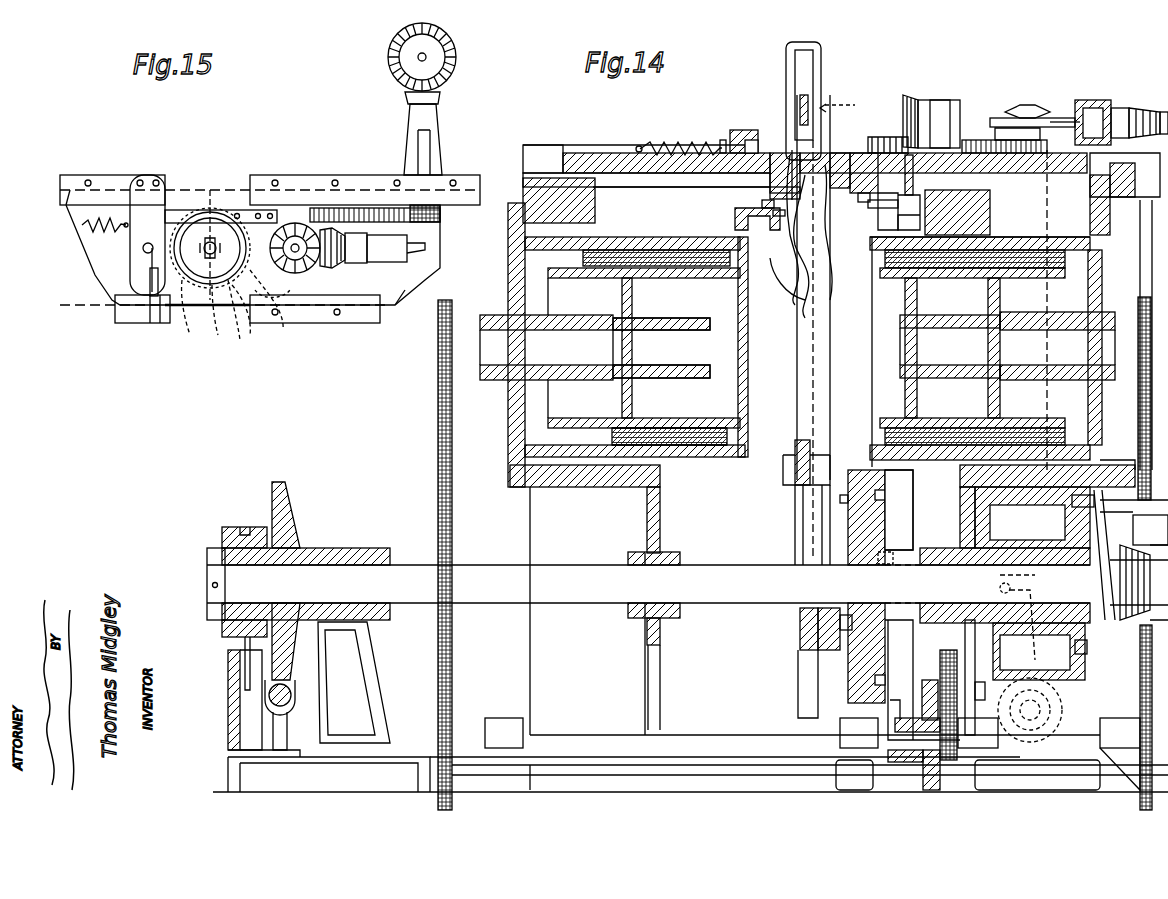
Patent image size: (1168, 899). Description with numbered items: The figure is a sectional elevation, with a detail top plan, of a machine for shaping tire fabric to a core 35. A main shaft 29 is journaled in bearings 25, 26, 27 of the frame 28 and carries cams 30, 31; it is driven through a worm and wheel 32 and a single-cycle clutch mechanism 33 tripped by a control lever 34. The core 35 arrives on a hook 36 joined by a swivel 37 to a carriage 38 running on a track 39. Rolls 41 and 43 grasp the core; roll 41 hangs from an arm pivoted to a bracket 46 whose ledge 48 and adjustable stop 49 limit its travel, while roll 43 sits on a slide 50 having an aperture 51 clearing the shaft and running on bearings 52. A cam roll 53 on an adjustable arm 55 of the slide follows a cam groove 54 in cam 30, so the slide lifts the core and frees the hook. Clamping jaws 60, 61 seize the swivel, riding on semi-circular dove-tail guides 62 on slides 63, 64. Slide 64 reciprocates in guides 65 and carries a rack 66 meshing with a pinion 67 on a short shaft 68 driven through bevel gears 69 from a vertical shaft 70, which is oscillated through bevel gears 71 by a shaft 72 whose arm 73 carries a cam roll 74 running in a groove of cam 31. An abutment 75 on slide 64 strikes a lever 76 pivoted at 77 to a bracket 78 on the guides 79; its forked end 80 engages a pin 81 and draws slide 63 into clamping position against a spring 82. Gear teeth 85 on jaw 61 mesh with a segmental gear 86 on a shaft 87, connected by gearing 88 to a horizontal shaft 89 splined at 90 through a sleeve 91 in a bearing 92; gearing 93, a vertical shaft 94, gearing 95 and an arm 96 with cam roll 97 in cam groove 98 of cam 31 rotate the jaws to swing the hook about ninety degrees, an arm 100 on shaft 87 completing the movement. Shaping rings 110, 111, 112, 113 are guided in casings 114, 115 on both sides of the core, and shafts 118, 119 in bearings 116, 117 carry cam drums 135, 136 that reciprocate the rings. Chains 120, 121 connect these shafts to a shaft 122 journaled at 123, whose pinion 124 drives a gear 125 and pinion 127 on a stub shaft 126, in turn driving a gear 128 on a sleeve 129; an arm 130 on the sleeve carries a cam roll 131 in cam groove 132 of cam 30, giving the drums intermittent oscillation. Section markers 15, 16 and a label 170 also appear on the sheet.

In FIG. 14, the section line 15 is at (855, 145).
In FIG. 14, the direction arrow 16 is at (824, 108).
In FIG. 14, the bearing 25 is at (358, 538).
In FIG. 14, the bearing 26 is at (628, 555).
In FIG. 14, the bearing 27 is at (935, 548).
In FIG. 14, the frame 28 is at (530, 530).
In FIG. 14, the main shaft 29 is at (493, 603).
In FIG. 14, the cam 30 is at (870, 515).
In FIG. 14, the cam 31 is at (1062, 510).
In FIG. 14, the worm and wheel 32 is at (290, 690).
In FIG. 14, the clutch mechanism 33 is at (222, 632).
In FIG. 14, the control lever 34 is at (235, 690).
In FIG. 14, the core 35 is at (797, 381).
In FIG. 14, the hook 36 is at (832, 290).
In FIG. 14, the swivel 37 is at (792, 150).
In FIG. 14, the carriage 38 is at (810, 90).
In FIG. 14, the track 39 is at (805, 98).
In FIG. 14, the roll 41 is at (790, 275).
In FIG. 14, the roll 43 is at (785, 475).
In FIG. 14, the bracket 46 is at (735, 212).
In FIG. 14, the ledge 48 is at (760, 203).
In FIG. 14, the adjustable stop 49 is at (778, 212).
In FIG. 14, the slide 50 is at (800, 630).
In FIG. 14, the aperture 51 is at (798, 530).
In FIG. 14, the bearings 52 is at (800, 702).
In FIG. 14, the cam roll 53 is at (845, 635).
In FIG. 14, the cam groove 54 is at (825, 500).
In FIG. 14, the arm 55 is at (800, 612).
In FIG. 15, the clamping jaw 60 is at (195, 235).
In FIG. 14, the clamping jaw 60 is at (790, 150).
In FIG. 15, the clamping jaw 61 is at (222, 240).
In FIG. 14, the clamping jaw 61 is at (833, 153).
In FIG. 15, the dove-tail guide 62 is at (182, 300).
In FIG. 14, the dove-tail guide 62 is at (775, 152).
In FIG. 15, the slide 63 is at (95, 262).
In FIG. 14, the slide 63 is at (585, 150).
In FIG. 15, the slide 64 is at (400, 300).
In FIG. 14, the slide 64 is at (950, 90).
In FIG. 15, the guides 65 is at (292, 180).
In FIG. 15, the rack 66 is at (352, 210).
In FIG. 14, the rack 66 is at (985, 140).
In FIG. 15, the pinion 67 is at (443, 216).
In FIG. 14, the pinion 67 is at (1040, 92).
In FIG. 15, the short shaft 68 is at (426, 150).
In FIG. 15, the bevel gears 69 is at (445, 88).
In FIG. 14, the bevel gears 69 is at (995, 125).
In FIG. 15, the vertical shaft 70 is at (430, 55).
In FIG. 14, the bevel gears 71 is at (1060, 682).
In FIG. 14, the shaft 72 is at (1032, 745).
In FIG. 14, the arm 73 is at (1030, 605).
In FIG. 14, the cam roll 74 is at (1012, 590).
In FIG. 15, the abutment 75 is at (172, 212).
In FIG. 15, the lever 76 is at (145, 268).
In FIG. 14, the lever 76 is at (705, 175).
In FIG. 15, the pivot 77 is at (144, 247).
In FIG. 15, the bracket 78 is at (135, 196).
In FIG. 14, the bracket 78 is at (735, 135).
In FIG. 15, the guides 79 is at (72, 178).
In FIG. 15, the forked end 80 is at (155, 325).
In FIG. 15, the pin 81 is at (150, 283).
In FIG. 15, the spring 82 is at (82, 232).
In FIG. 14, the spring 82 is at (658, 142).
In FIG. 15, the gear teeth 85 is at (232, 300).
In FIG. 14, the gear teeth 85 is at (856, 195).
In FIG. 15, the segmental gear 86 is at (272, 310).
In FIG. 14, the segmental gear 86 is at (882, 200).
In FIG. 15, the shaft 87 is at (295, 243).
In FIG. 14, the shaft 87 is at (915, 185).
In FIG. 15, the gearing 88 is at (318, 268).
In FIG. 14, the gearing 88 is at (908, 100).
In FIG. 15, the horizontal shaft 89 is at (400, 252).
In FIG. 14, the spline 90 is at (1060, 110).
In FIG. 14, the sleeve 91 is at (1120, 108).
In FIG. 14, the bearing 92 is at (1095, 100).
In FIG. 14, the gearing 93 is at (1145, 115).
In FIG. 14, the vertical shaft 94 is at (1140, 235).
In FIG. 14, the gearing 95 is at (1135, 545).
In FIG. 14, the arm 96 is at (1125, 590).
In FIG. 14, the cam roll 97 is at (1090, 500).
In FIG. 14, the cam groove 98 is at (1085, 650).
In FIG. 15, the arm 100 is at (245, 310).
In FIG. 14, the arm 100 is at (880, 208).
In FIG. 14, the ring 110 is at (648, 428).
In FIG. 14, the ring 111 is at (676, 428).
In FIG. 14, the ring 112 is at (680, 445).
In FIG. 14, the ring 113 is at (708, 450).
In FIG. 14, the guiding casing 114 is at (580, 487).
In FIG. 14, the guiding casing 115 is at (950, 460).
In FIG. 14, the bearing 116 is at (500, 385).
In FIG. 14, the bearing 117 is at (1060, 378).
In FIG. 14, the shaft 118 is at (595, 347).
In FIG. 14, the shaft 119 is at (1007, 346).
In FIG. 14, the chain 120 is at (452, 465).
In FIG. 14, the chain 121 is at (1140, 435).
In FIG. 14, the shaft 122 is at (610, 712).
In FIG. 14, the journal 123 is at (505, 710).
In FIG. 14, the pinion 124 is at (965, 778).
In FIG. 14, the gear 125 is at (958, 645).
In FIG. 14, the stub shaft 126 is at (982, 682).
In FIG. 14, the pinion 127 is at (930, 680).
In FIG. 14, the gear 128 is at (940, 785).
In FIG. 14, the sleeve 129 is at (905, 760).
In FIG. 14, the arm 130 is at (898, 640).
In FIG. 14, the cam roll 131 is at (895, 520).
In FIG. 14, the cam groove 132 is at (887, 495).
In FIG. 14, the cam drum 135 is at (645, 280).
In FIG. 14, the cam drum 136 is at (935, 420).
In FIG. 14, the axis line 170 is at (1045, 268).